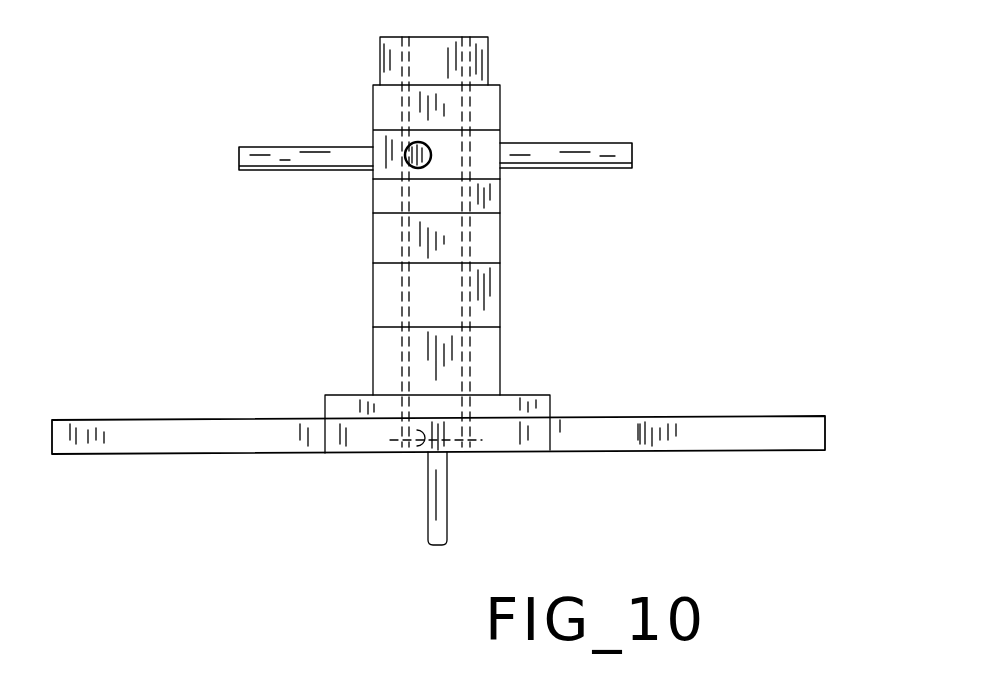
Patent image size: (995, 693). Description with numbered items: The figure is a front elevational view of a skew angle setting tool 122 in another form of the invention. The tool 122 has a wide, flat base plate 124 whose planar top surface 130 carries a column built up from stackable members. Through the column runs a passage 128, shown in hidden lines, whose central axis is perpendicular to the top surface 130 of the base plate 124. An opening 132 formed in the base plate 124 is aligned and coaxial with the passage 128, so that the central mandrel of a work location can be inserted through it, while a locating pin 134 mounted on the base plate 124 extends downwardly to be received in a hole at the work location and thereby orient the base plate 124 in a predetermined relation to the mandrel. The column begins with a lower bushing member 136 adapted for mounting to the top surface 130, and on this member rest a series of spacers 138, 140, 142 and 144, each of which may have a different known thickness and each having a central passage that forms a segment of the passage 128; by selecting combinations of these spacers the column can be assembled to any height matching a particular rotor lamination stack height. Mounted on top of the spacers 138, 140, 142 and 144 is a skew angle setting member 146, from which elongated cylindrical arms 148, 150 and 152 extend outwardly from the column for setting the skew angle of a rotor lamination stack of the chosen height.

The skew angle setting tool 122 is at (588, 512).
The base plate 124 is at (775, 415).
The passage 128 is at (408, 352).
The planar top surface 130 is at (677, 417).
The opening 132 is at (418, 452).
The locating pin 134 is at (448, 540).
The lower bushing member 136 is at (552, 402).
The spacer 138 is at (503, 350).
The spacer 140 is at (495, 292).
The spacer 142 is at (502, 236).
The spacer 144 is at (502, 190).
The skew angle setting member 146 is at (505, 133).
The elongated cylindrical arm 148 is at (613, 170).
The elongated cylindrical arm 150 is at (418, 168).
The elongated cylindrical arm 152 is at (262, 175).